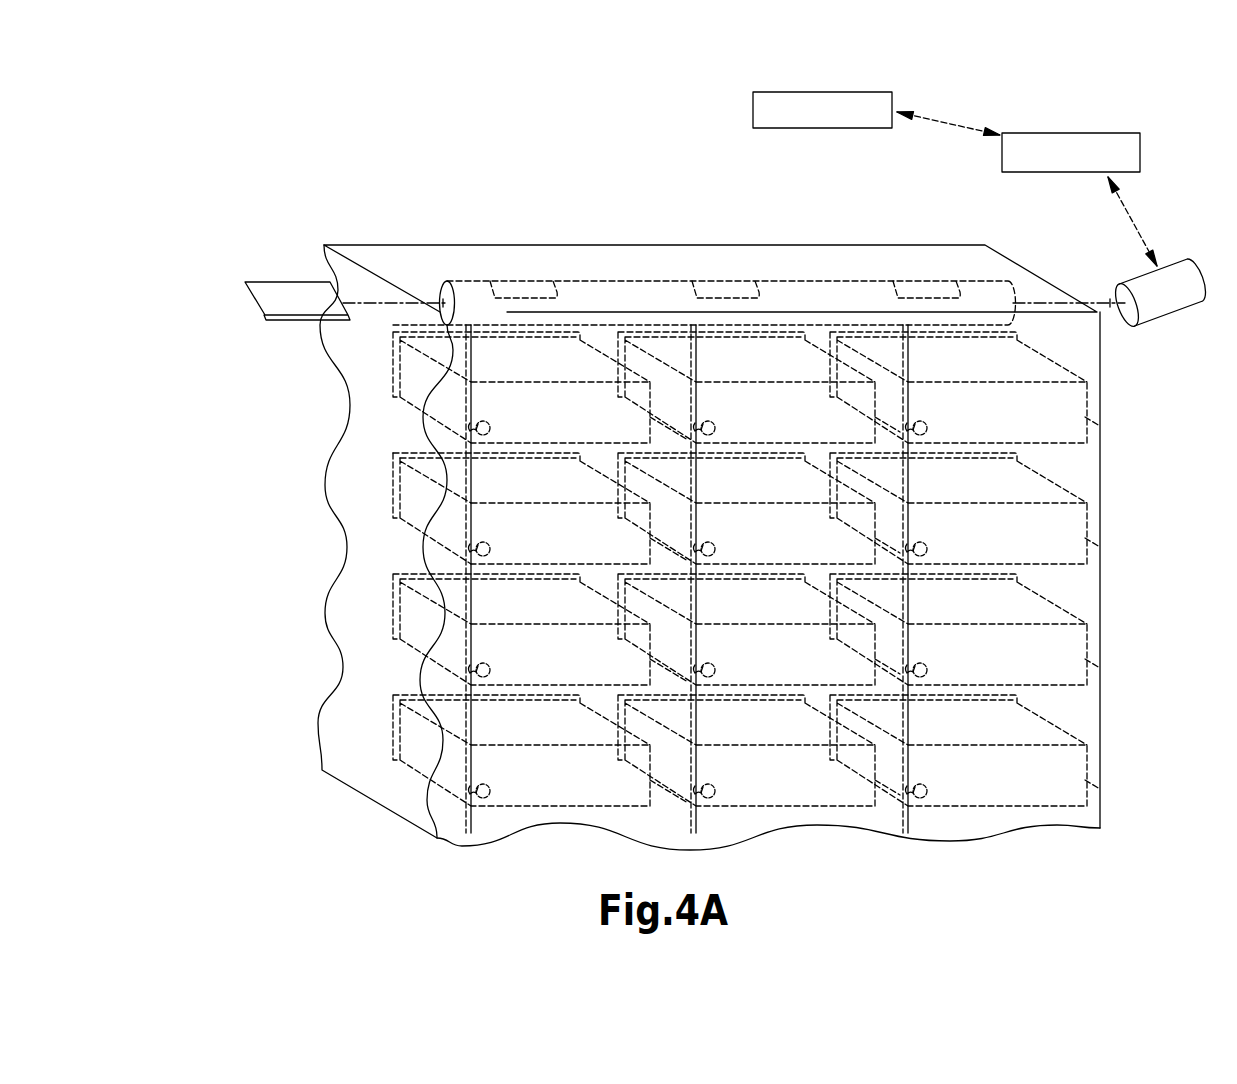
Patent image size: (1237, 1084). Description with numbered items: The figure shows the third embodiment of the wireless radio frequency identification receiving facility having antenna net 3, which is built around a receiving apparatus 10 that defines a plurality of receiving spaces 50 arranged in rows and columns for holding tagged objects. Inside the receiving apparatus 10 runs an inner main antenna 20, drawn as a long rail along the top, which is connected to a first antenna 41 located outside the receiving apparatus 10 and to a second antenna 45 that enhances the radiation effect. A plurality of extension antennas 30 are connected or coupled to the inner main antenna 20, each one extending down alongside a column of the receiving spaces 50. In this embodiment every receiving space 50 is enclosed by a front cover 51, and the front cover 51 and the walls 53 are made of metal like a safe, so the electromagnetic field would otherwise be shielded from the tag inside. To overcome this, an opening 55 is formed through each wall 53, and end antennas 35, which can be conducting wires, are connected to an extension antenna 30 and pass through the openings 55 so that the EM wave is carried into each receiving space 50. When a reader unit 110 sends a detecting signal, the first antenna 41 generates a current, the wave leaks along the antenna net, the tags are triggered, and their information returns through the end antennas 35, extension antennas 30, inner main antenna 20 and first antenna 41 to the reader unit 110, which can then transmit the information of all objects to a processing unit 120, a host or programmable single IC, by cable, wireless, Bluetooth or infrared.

The wireless radio frequency identification receiving facility having antenna net 3 is at (285, 200).
The receiving apparatus 10 is at (934, 258).
The inner main antenna 20 is at (777, 292).
The extension antennas 30 is at (463, 825).
The end antennas 35 is at (470, 790).
The first antenna 41 is at (1167, 318).
The second antenna 45 is at (248, 291).
The receiving spaces 50 is at (224, 537).
The front cover 51 is at (397, 612).
The walls 53 is at (437, 495).
The opening 55 is at (471, 675).
The reader unit 110 is at (1140, 137).
The processing unit 120 is at (753, 99).